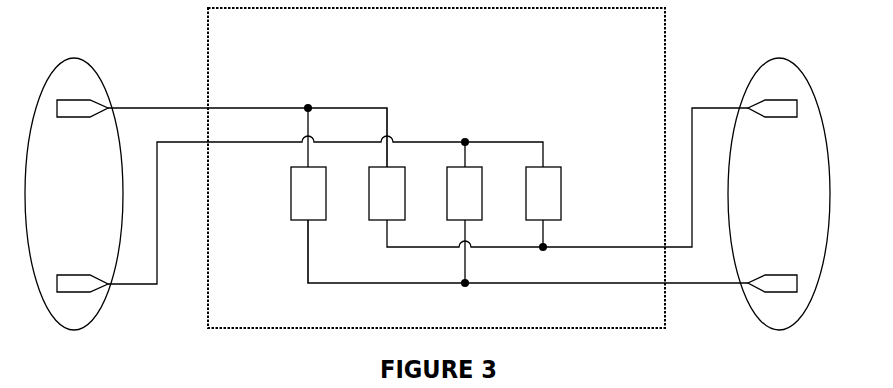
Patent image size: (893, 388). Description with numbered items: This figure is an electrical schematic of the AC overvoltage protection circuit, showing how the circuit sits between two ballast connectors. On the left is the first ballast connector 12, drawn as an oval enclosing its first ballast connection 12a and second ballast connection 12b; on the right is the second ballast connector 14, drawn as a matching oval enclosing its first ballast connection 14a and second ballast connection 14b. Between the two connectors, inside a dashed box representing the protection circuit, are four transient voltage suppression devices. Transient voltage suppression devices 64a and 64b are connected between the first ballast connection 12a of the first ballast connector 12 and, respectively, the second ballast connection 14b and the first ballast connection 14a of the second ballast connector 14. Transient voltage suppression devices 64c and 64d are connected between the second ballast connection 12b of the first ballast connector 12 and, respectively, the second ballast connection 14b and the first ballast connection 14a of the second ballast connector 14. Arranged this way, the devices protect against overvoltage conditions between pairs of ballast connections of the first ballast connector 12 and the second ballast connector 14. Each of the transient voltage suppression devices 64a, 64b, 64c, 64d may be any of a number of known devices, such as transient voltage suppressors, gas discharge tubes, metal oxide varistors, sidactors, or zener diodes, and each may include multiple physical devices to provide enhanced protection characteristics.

The first ballast connector 12 is at (80, 61).
The first ballast connection 12a is at (84, 105).
The second ballast connection 12b is at (83, 281).
The second ballast connector 14 is at (764, 63).
The first ballast connection 14a is at (790, 107).
The second ballast connection 14b is at (778, 282).
The transient voltage suppression device 64a is at (296, 207).
The transient voltage suppression device 64b is at (378, 207).
The transient voltage suppression device 64c is at (475, 188).
The transient voltage suppression device 64d is at (545, 180).